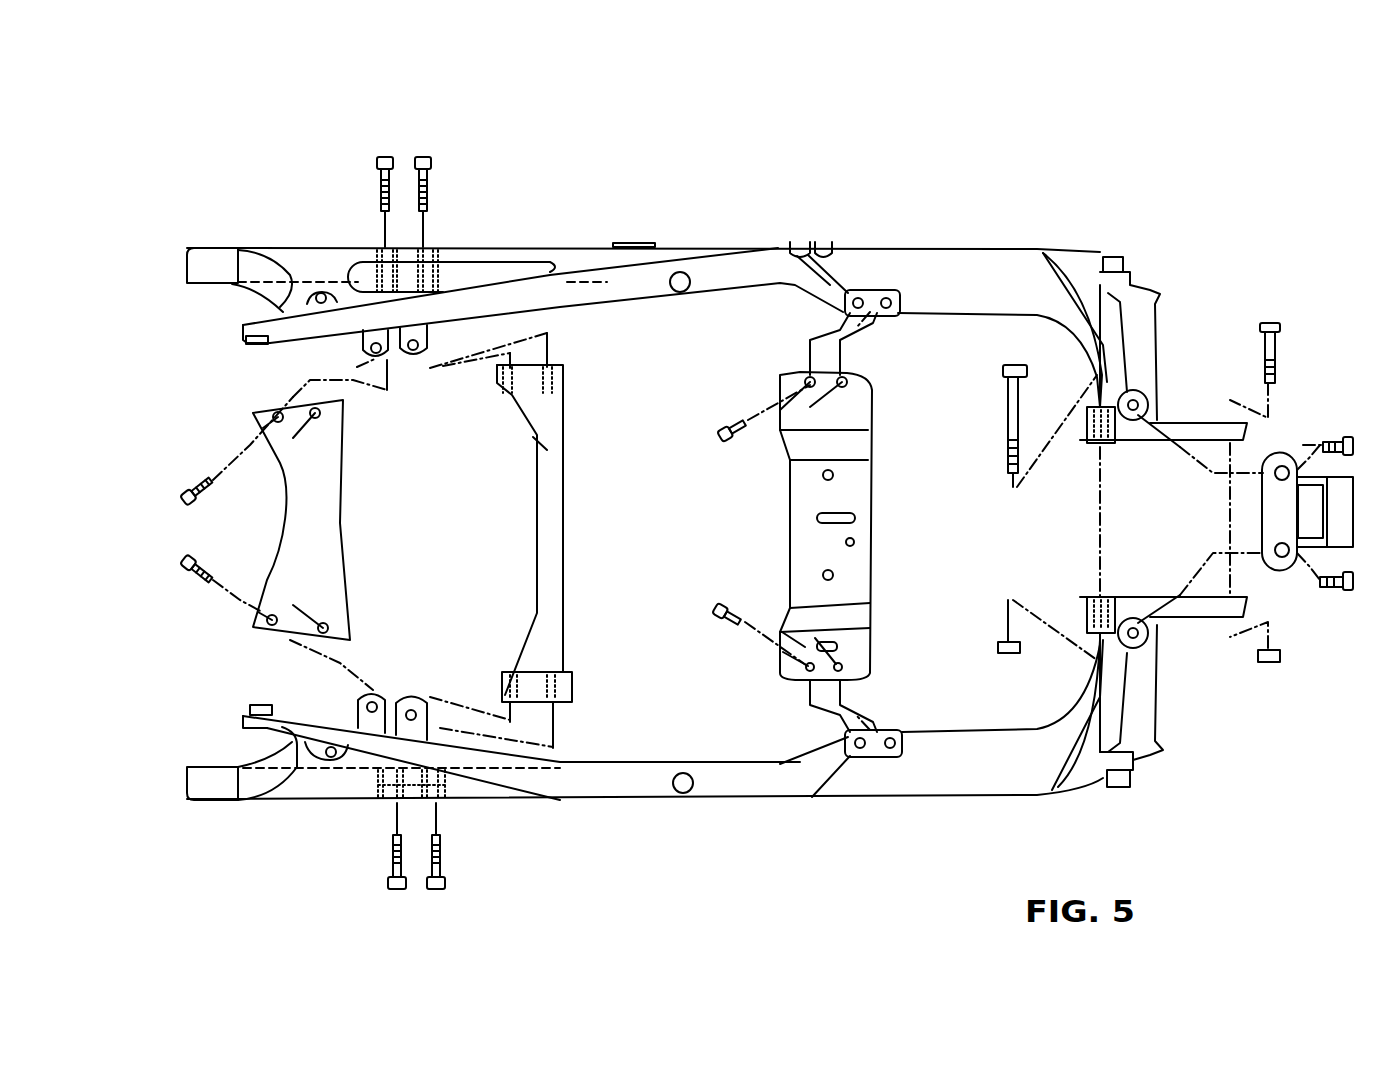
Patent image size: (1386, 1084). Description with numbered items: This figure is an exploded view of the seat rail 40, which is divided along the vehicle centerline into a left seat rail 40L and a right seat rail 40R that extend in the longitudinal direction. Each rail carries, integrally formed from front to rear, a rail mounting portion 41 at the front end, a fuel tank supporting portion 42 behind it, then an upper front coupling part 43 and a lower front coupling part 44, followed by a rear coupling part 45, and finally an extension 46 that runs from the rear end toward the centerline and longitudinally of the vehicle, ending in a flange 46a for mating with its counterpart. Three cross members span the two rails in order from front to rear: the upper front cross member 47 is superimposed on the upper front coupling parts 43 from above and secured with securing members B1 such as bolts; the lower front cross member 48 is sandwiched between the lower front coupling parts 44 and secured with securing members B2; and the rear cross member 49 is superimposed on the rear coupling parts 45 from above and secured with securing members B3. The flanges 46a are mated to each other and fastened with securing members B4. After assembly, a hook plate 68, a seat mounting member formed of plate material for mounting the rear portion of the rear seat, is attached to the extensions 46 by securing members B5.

The seat rail 40 is at (130, 200).
The right seat rail 40R is at (715, 243).
The left seat rail 40L is at (708, 803).
The rail mounting portion 41 is at (240, 330).
The fuel tank supporting portion 42 is at (310, 292).
The upper front coupling part 43 is at (412, 357).
The lower front coupling part 44 is at (405, 245).
The rear coupling part 45 is at (873, 300).
The extension 46 is at (1147, 330).
The flange 46a is at (1217, 422).
The upper front cross member 47 is at (323, 535).
The lower front cross member 48 is at (557, 537).
The rear cross member 49 is at (872, 530).
The hook plate 68 is at (1289, 570).
The securing member B1 is at (185, 565).
The securing member B2 is at (422, 152).
The securing member B3 is at (722, 440).
The securing member B4 is at (1008, 417).
The securing member B5 is at (1328, 437).